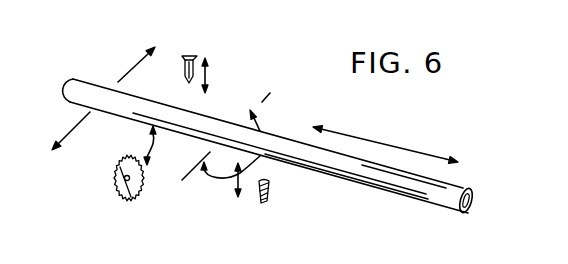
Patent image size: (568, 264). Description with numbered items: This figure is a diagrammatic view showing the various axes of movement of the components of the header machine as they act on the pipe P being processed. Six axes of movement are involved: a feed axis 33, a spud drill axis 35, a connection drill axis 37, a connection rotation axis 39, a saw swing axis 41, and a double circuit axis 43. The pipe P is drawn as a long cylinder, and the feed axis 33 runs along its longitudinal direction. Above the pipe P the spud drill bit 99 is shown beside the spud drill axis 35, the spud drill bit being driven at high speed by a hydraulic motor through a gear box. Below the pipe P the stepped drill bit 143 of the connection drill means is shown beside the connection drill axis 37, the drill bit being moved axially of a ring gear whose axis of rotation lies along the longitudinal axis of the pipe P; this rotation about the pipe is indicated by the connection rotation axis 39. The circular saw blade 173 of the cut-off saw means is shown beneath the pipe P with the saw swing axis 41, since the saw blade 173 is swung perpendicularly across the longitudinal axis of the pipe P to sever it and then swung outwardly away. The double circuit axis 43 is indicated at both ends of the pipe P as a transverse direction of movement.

The pipe P is at (440, 198).
The feed axis 33 is at (386, 144).
The spud drill axis 35 is at (209, 79).
The connection drill axis 37 is at (238, 187).
The connection rotation axis 39 is at (207, 176).
The saw swing axis 41 is at (150, 147).
The double circuit axis 43 is at (128, 72).
The spud drill bit 99 is at (173, 72).
The stepped drill bit 143 is at (270, 185).
The circular saw blade 173 is at (125, 199).